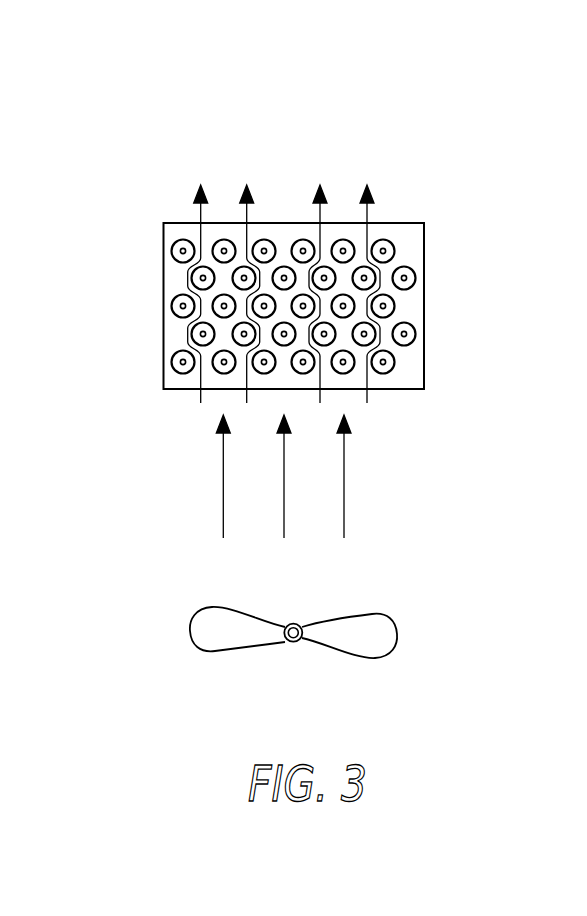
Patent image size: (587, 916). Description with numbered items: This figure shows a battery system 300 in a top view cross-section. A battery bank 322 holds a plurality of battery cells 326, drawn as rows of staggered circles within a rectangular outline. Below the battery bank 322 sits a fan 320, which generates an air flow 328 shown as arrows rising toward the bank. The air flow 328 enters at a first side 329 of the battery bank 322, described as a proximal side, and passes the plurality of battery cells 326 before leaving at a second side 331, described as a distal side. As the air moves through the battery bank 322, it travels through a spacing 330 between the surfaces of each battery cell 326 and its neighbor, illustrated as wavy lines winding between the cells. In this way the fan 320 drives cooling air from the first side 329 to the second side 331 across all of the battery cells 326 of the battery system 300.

The battery system 300 is at (418, 68).
The fan 320 is at (397, 647).
The battery bank 322 is at (163, 338).
The battery cell 326 is at (181, 251).
The air flow 328 is at (344, 477).
The first side 329 is at (180, 391).
The spacing 330 is at (367, 233).
The second side 331 is at (180, 222).